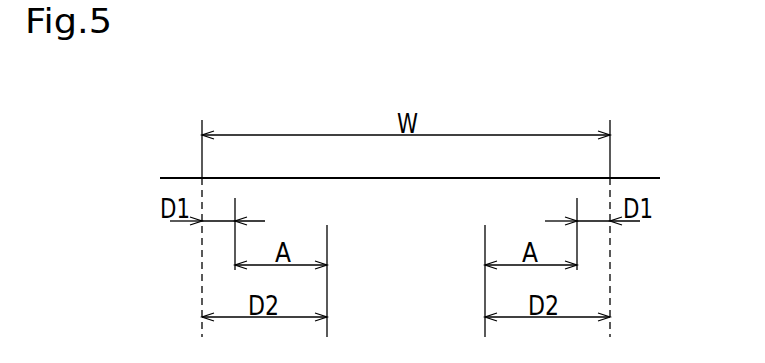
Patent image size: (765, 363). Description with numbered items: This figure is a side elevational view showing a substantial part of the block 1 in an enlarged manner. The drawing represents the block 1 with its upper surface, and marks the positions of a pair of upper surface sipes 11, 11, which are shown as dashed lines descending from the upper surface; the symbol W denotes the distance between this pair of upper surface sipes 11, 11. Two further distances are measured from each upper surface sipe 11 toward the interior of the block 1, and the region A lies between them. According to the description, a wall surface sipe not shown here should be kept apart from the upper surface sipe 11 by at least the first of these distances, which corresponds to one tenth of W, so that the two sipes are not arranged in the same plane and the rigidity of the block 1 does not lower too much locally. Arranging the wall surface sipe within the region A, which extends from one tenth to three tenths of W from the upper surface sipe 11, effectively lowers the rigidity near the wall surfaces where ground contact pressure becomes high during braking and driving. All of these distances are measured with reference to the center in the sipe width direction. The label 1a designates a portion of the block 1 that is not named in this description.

The block 1 is at (522, 178).
The end face of substrate 1a is at (171, 178).
The upper surface sipe 11 is at (200, 258).